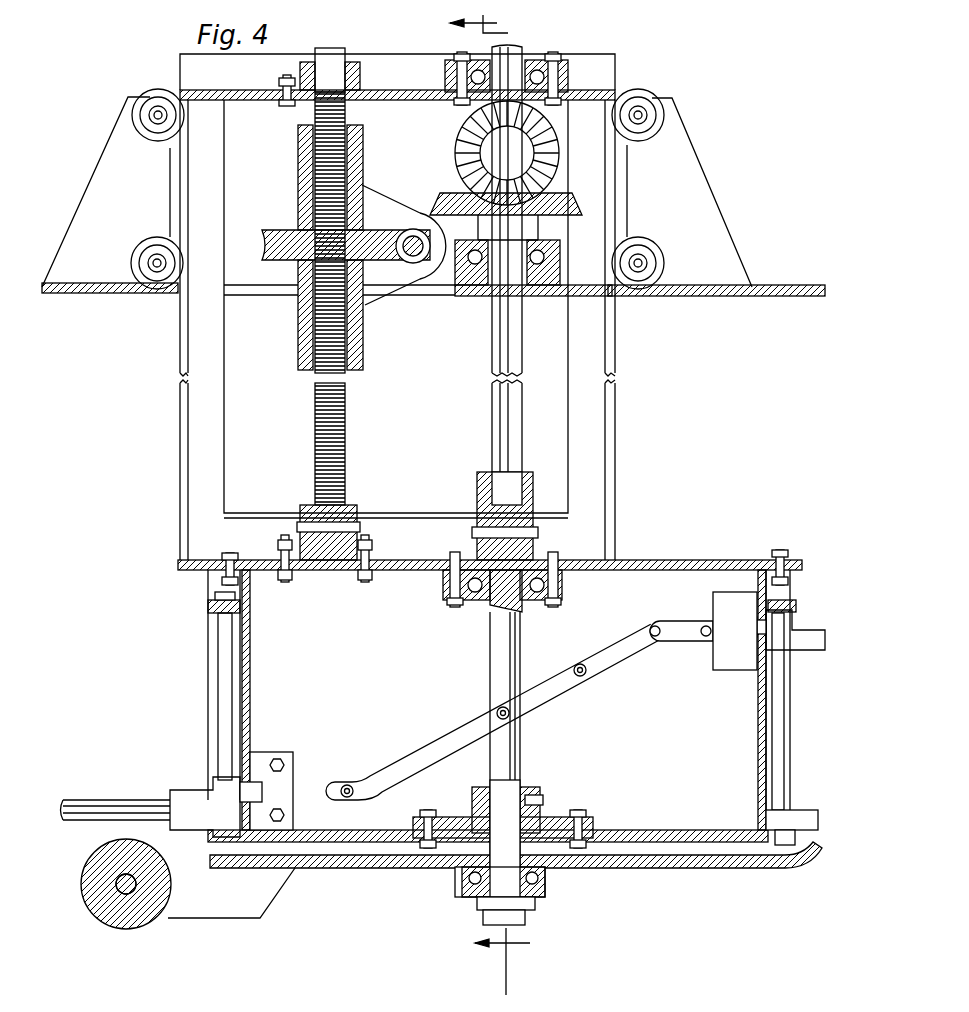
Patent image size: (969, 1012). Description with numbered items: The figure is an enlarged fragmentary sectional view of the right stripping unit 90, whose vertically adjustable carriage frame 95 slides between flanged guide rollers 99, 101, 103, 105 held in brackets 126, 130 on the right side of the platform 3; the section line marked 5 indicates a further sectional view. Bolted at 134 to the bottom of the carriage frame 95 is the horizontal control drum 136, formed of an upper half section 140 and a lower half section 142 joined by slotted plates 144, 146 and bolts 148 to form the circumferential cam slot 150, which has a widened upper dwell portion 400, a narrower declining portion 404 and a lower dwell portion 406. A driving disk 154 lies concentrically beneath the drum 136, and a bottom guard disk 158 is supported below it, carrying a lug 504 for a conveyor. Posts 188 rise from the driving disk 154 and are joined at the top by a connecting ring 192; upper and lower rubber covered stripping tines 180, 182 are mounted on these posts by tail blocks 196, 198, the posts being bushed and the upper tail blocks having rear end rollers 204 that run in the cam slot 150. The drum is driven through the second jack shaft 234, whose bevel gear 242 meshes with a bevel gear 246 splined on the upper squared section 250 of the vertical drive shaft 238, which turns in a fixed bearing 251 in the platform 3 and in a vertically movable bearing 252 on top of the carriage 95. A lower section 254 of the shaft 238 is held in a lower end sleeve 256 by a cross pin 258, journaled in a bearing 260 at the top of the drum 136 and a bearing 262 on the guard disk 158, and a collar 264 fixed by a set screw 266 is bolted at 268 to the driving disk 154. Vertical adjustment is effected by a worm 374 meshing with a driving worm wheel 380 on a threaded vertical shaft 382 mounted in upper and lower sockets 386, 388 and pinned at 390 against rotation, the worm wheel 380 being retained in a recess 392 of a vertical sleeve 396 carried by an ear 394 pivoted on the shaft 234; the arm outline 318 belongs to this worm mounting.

The platform 3 is at (775, 297).
The section line 5- 5 is at (490, 505).
The right stripping unit 90 is at (170, 493).
The carriage frame 95 is at (182, 422).
The guide roller 99 is at (154, 128).
The guide roller 101 is at (140, 255).
The guide roller 103 is at (643, 92).
The guide roller 105 is at (655, 250).
The bracket 126 is at (120, 128).
The bracket 130 is at (690, 146).
The bolt 134 is at (228, 556).
The control drum 136 is at (504, 700).
The upper half section 140 is at (257, 636).
The lower half section 142 is at (355, 820).
The slotted plate 144 is at (714, 600).
The slotted plate 146 is at (266, 752).
The bolt 148 is at (281, 762).
The cam slot 150 is at (545, 693).
The driving disk 154 is at (690, 838).
The bottom guard disk 158 is at (708, 858).
The upper stripping tine 180 is at (93, 799).
The lower stripping tine 182 is at (67, 808).
The post 188 is at (224, 682).
The connecting ring 192 is at (214, 605).
The tail block 196 is at (184, 790).
The tail block 198 is at (178, 840).
The rear end roller 204 is at (264, 790).
The second jack shaft 234 is at (408, 259).
The drive shaft 238 is at (486, 444).
The bevel gear 242 is at (457, 162).
The bevel gear 246 is at (444, 200).
The upper squared section 250 is at (490, 336).
The fixed bearing 251 is at (470, 267).
The vertically movable bearing 252 is at (550, 62).
The lower section 254 is at (498, 668).
The lower end sleeve 256 is at (479, 490).
The cross pin 258 is at (540, 536).
The bearing 260 is at (473, 597).
The bearing 262 is at (462, 889).
The collar 264 is at (472, 794).
The set screw 266 is at (545, 800).
The bolt 268 is at (582, 812).
The swing arm 318 is at (410, 283).
The worm 374 is at (407, 231).
The driving worm wheel 380 is at (271, 232).
The threaded vertical shaft 382 is at (313, 412).
The upper socket 386 is at (352, 64).
The lower socket 388 is at (380, 556).
The pin 390 is at (360, 526).
The recess 392 is at (300, 264).
The ear 394 is at (300, 143).
The vertical sleeve 396 is at (373, 197).
The dwell portion 400 is at (700, 636).
The declining portion 404 is at (455, 735).
The lower dwell portion 406 is at (340, 784).
The lug 504 is at (228, 905).